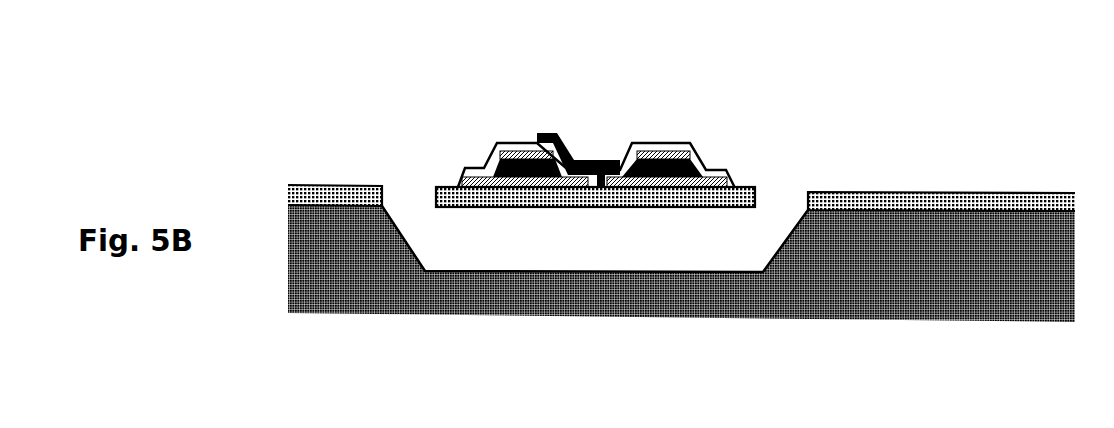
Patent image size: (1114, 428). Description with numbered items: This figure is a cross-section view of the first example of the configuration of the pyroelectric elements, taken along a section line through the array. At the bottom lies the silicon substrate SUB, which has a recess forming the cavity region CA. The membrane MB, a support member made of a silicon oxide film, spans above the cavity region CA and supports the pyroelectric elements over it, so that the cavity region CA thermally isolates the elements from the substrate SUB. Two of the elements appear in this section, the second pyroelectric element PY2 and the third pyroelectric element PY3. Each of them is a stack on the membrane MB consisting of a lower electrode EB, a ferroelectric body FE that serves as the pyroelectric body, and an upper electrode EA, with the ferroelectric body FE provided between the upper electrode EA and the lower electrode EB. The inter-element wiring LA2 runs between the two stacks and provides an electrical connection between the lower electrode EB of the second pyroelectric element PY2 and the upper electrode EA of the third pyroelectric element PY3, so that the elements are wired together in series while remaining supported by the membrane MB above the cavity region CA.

The substrate SUB is at (1000, 312).
The cavity region CA is at (525, 255).
The membrane MB is at (618, 203).
The third pyroelectric element PY3 is at (549, 110).
The lower electrode EB is at (458, 186).
The ferroelectric body FE is at (494, 170).
The upper electrode EA is at (580, 109).
The second pyroelectric element PY2 is at (725, 151).
The inter-element wiring LA2 is at (585, 163).